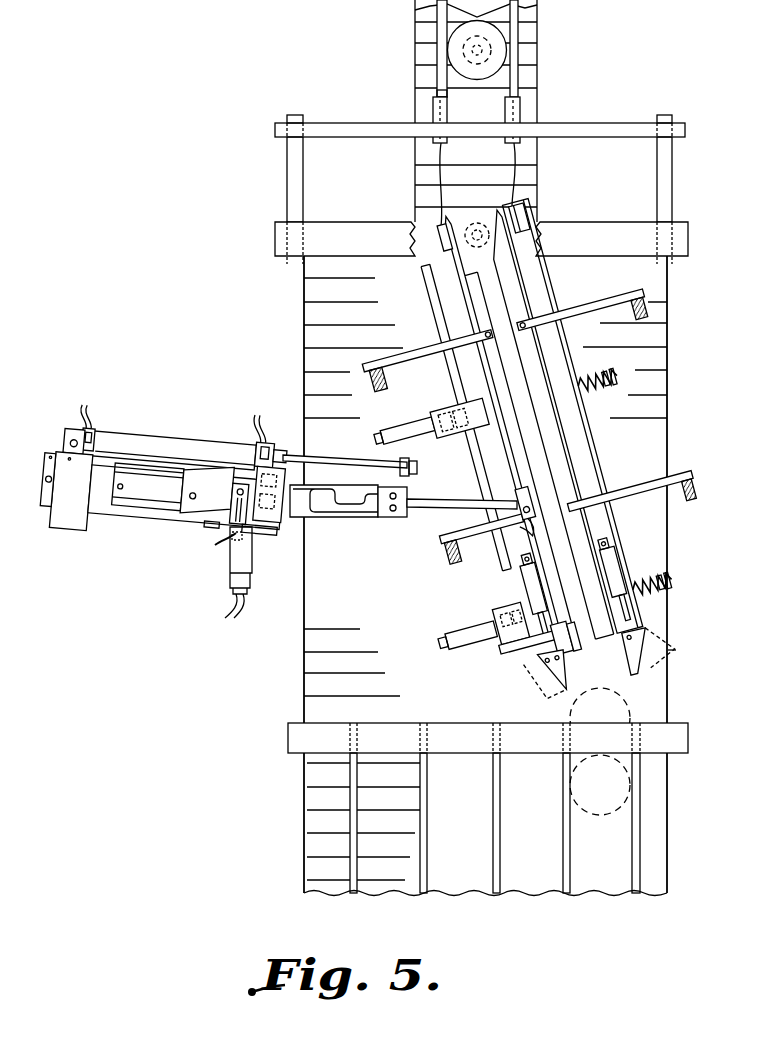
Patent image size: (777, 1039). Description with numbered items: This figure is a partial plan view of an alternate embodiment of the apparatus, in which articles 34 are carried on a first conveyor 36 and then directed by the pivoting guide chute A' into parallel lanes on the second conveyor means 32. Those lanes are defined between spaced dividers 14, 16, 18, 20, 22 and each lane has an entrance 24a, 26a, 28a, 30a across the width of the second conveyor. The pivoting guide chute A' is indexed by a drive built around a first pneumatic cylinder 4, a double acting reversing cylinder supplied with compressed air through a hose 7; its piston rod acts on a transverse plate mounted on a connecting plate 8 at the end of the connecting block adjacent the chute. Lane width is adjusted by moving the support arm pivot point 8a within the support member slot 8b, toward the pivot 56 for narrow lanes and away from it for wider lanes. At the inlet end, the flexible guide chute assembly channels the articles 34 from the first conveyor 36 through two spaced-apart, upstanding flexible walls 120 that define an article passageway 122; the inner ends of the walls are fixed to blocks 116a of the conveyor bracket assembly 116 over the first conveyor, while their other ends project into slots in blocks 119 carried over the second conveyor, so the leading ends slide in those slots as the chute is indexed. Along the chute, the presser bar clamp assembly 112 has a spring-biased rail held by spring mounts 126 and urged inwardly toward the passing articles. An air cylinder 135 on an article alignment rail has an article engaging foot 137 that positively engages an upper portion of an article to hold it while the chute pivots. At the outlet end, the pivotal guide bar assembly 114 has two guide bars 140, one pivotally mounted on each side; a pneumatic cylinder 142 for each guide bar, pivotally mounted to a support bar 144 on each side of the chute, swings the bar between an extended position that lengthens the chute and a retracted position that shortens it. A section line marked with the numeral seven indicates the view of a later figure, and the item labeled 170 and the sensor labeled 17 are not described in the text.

The first pneumatic cylinder 4 is at (133, 440).
The hose 7 is at (653, 632).
The connecting plate 8 is at (455, 500).
The support arm pivot point 8a is at (470, 532).
The support member slot 8b is at (472, 460).
The divider 14 is at (345, 893).
The divider 16 is at (415, 893).
The sensor 17 is at (232, 560).
The divider 18 is at (488, 893).
The divider 20 is at (558, 893).
The divider 22 is at (628, 893).
The lane entrance 24a is at (400, 789).
The lane entrance 26a is at (475, 789).
The lane entrance 28a is at (548, 789).
The lane entrance 30a is at (625, 758).
The second conveyor means 32 is at (326, 310).
The article 34 is at (495, 45).
The first conveyor 36 is at (500, 86).
The pivot 56 is at (465, 222).
The presser bar clamp assembly 112 is at (446, 399).
The pivotal guide bar assembly 114 is at (680, 650).
The conveyor bracket assembly 116 is at (326, 108).
The block 116a is at (438, 110).
The block 119 is at (440, 228).
The flexible wall 120 is at (441, 176).
The article passageway 122 is at (489, 136).
The spring mount 126 is at (605, 370).
The air cylinder 135 is at (497, 648).
The article engaging foot 137 is at (573, 643).
The guide bar 140 is at (555, 690).
The pneumatic cylinder 142 is at (527, 582).
The support bar 144 is at (523, 548).
The panel 170 is at (542, 150).
The pivoting guide chute A' is at (559, 426).